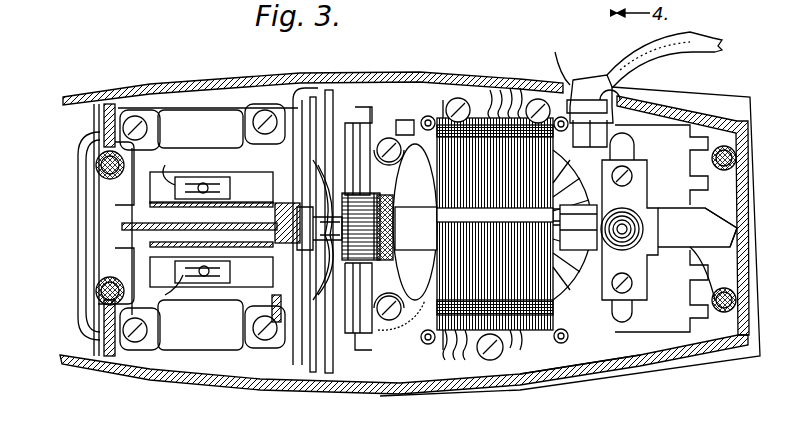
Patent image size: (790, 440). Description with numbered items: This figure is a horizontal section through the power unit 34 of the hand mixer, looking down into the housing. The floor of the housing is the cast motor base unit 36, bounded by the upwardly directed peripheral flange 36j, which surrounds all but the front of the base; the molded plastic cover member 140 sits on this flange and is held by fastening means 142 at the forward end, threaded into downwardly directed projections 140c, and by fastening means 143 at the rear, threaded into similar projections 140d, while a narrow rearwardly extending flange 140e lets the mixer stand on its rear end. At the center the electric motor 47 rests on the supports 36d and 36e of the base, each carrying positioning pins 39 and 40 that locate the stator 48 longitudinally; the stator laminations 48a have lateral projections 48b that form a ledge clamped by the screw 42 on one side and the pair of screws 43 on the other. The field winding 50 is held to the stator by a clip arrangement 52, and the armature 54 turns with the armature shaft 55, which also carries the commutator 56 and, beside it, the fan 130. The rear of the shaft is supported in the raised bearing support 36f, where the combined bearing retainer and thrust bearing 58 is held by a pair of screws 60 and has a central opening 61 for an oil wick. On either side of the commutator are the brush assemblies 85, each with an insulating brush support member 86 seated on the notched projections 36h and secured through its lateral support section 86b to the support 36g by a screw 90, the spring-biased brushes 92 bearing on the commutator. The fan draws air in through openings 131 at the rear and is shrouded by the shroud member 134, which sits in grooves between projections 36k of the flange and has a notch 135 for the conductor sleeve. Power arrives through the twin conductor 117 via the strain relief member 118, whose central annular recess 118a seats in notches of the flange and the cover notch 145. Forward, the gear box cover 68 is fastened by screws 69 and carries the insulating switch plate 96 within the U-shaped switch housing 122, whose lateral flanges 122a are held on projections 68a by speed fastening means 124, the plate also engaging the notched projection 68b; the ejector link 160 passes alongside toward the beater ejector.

The power unit 34 is at (215, 406).
The motor base unit 36 is at (663, 344).
The motor support 36d is at (443, 100).
The motor support 36e is at (442, 352).
The raised bearing support 36f is at (640, 315).
The brush holder support 36g is at (398, 133).
The brush holder support 36h is at (374, 108).
The peripheral flange 36j is at (622, 353).
The projections 36k is at (330, 92).
The positioning pin 39 is at (427, 115).
The positioning pin 40 is at (557, 130).
The clamping screw 42 is at (493, 362).
The clamping screws 43 is at (455, 130).
The electric motor 47 is at (467, 363).
The stator 48 is at (575, 227).
The stator laminations 48a is at (574, 244).
The lateral projections 48b is at (506, 90).
The field winding 50 is at (574, 205).
The clip arrangement 52 is at (488, 243).
The armature 54 is at (381, 260).
The armature shaft 55 is at (622, 220).
The commutator 56 is at (385, 205).
The combined bearing retainer and thrust bearing 58 is at (652, 204).
The screws 60 is at (634, 178).
The opening 61 is at (625, 240).
The gear box cover 68 is at (198, 117).
The projections 68a is at (202, 184).
The upwardly directed projection 68b is at (275, 242).
The screws 69 is at (258, 123).
The brush assemblies 85 is at (342, 150).
The brush support member 86 is at (375, 293).
The lateral support section 86b is at (395, 157).
The screw 90 is at (386, 138).
The brushes 92 is at (347, 195).
The insulating plate 96 is at (142, 231).
The twin conductor 117 is at (655, 46).
The strain relief member 118 is at (588, 78).
The central annular recess 118a is at (606, 94).
The switch housing 122 is at (226, 196).
The lateral flanges 122a is at (256, 180).
The speed fastening means 124 is at (163, 229).
The fan 130 is at (273, 218).
The openings 131 is at (640, 145).
The shroud member 134 is at (303, 367).
The notch 135 is at (290, 96).
The cover member 140 is at (173, 378).
The projections 140c is at (98, 162).
The projections 140d is at (711, 160).
The rearwardly extending flange 140e is at (752, 97).
The fastening means 142 is at (93, 180).
The fastening means 143 is at (705, 208).
The notch 145 is at (553, 62).
The ejector link 160 is at (272, 310).